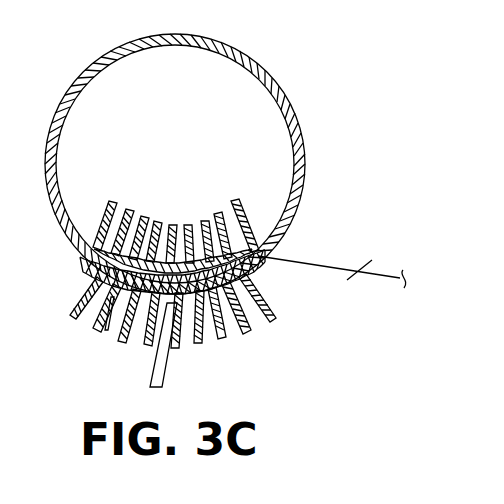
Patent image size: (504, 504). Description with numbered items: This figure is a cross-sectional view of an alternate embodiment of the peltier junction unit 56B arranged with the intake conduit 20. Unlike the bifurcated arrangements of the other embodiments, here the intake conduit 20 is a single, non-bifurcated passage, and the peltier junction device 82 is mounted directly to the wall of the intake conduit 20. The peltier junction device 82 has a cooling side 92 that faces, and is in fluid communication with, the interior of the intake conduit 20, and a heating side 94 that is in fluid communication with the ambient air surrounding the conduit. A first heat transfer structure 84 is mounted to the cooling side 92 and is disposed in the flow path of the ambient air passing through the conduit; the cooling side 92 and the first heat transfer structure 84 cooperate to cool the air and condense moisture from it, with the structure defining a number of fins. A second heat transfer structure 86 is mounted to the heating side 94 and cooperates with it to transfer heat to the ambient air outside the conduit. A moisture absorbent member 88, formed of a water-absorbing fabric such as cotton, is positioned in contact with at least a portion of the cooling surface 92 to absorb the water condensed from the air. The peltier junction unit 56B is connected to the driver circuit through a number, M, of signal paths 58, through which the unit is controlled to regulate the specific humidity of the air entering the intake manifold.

The intake conduit 20 is at (263, 68).
The peltier junction unit 56B is at (172, 157).
The peltier junction device 82 is at (257, 252).
The cooling side 92 is at (242, 250).
The first heat transfer structure 84 is at (112, 202).
The second heat transfer structure 86 is at (72, 290).
The moisture absorbent member 88 is at (170, 368).
The heating side 94 is at (110, 318).
The signal paths 58 is at (366, 275).